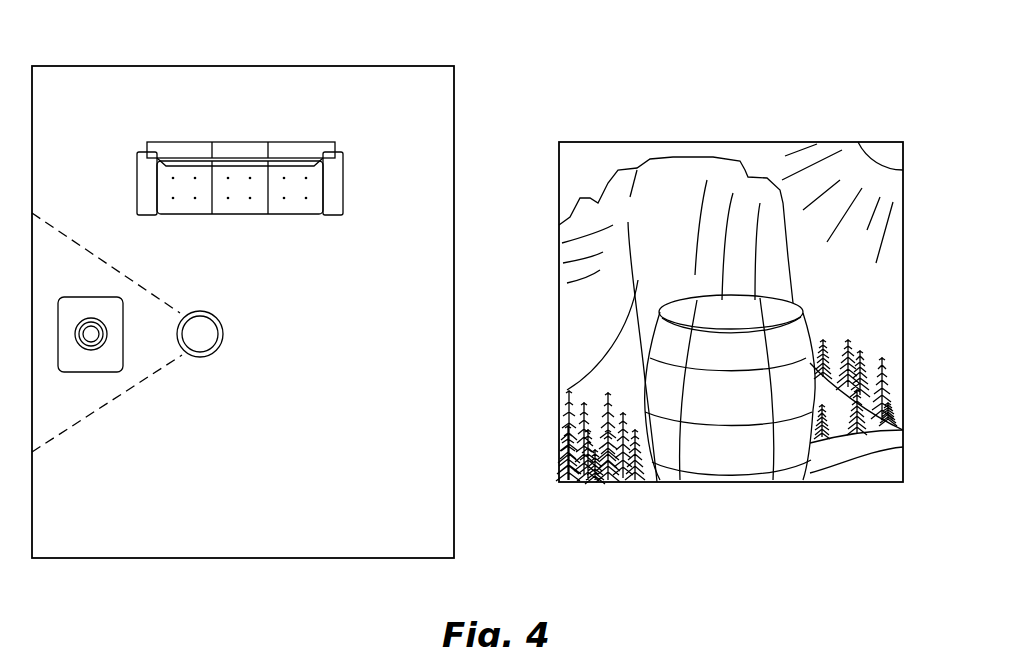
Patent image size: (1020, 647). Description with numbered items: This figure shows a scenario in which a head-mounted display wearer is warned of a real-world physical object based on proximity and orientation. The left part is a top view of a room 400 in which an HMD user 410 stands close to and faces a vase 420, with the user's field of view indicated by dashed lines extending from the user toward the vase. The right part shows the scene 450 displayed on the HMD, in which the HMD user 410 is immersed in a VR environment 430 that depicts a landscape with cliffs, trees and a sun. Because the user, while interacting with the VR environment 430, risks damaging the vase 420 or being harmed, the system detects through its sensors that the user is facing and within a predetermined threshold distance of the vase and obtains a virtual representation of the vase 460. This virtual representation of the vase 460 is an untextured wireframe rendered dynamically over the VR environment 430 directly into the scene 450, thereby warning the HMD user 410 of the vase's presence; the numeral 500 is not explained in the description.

The room 400 is at (250, 66).
The HMD user 410 is at (217, 315).
The vase 420 is at (88, 317).
The VR environment 430 is at (845, 300).
The scene 450 is at (718, 142).
The virtual representation of the vase 460 is at (743, 458).
The system 500 is at (273, 634).